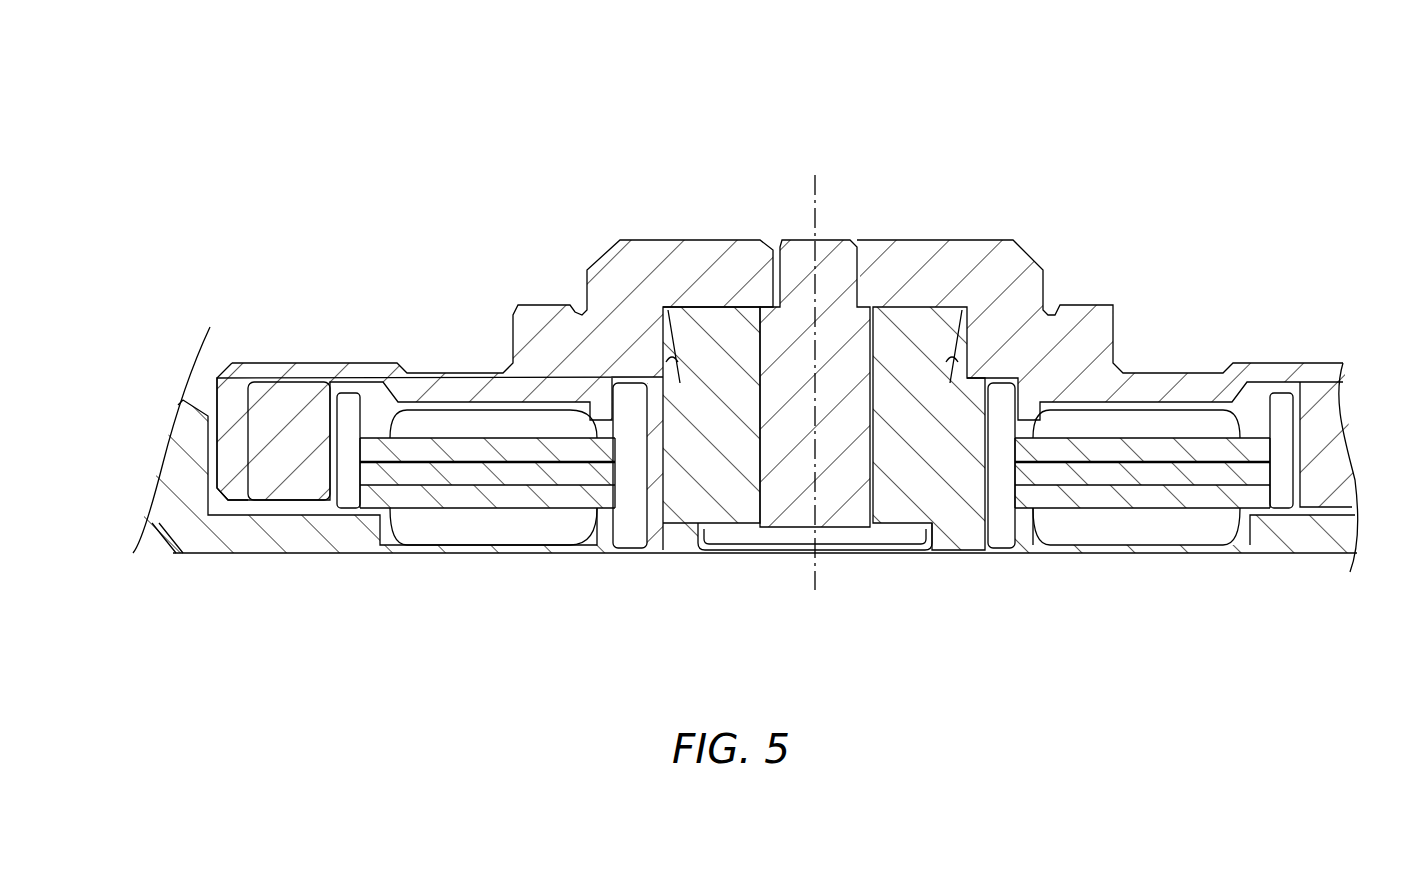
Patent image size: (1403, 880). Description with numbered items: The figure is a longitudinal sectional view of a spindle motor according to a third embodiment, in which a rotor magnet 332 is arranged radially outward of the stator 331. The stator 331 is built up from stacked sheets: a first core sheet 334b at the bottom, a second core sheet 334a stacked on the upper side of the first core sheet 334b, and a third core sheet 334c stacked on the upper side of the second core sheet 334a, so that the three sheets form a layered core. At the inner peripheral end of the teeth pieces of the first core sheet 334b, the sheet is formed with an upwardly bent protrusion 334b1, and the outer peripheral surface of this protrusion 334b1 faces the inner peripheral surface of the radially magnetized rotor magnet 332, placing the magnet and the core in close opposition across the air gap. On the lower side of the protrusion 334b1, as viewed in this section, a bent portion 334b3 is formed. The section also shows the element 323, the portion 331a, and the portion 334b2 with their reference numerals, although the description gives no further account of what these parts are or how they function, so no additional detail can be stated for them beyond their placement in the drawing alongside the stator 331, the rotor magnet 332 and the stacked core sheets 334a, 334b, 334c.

The stator core 323 is at (312, 463).
The stator 331 is at (366, 410).
The housing cover portion 331a is at (1080, 420).
The rotor magnet 332 is at (283, 440).
The second core sheet 334a is at (530, 470).
The first core sheet 334b is at (587, 497).
The protrusion 334b1 is at (347, 440).
The board holder 334b2 is at (1293, 423).
The bent portion 334b3 is at (360, 498).
The third core sheet 334c is at (587, 450).